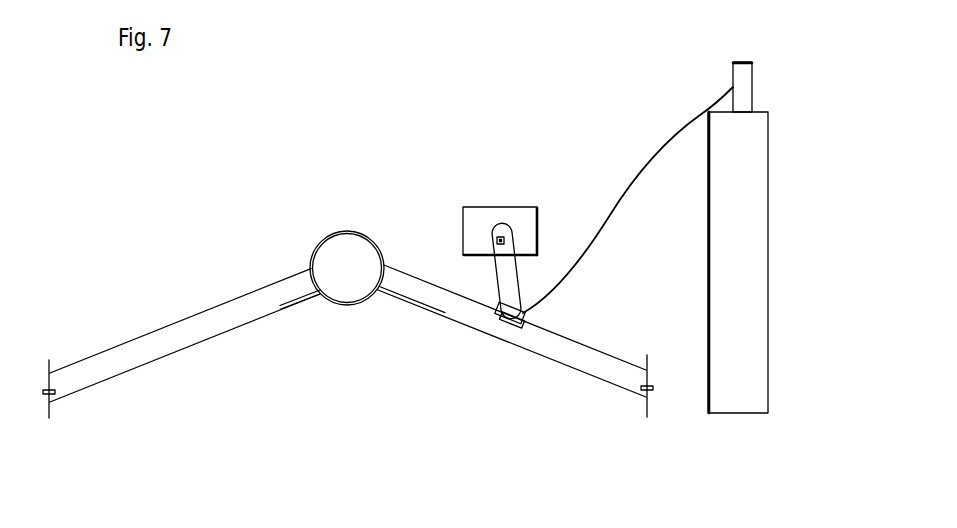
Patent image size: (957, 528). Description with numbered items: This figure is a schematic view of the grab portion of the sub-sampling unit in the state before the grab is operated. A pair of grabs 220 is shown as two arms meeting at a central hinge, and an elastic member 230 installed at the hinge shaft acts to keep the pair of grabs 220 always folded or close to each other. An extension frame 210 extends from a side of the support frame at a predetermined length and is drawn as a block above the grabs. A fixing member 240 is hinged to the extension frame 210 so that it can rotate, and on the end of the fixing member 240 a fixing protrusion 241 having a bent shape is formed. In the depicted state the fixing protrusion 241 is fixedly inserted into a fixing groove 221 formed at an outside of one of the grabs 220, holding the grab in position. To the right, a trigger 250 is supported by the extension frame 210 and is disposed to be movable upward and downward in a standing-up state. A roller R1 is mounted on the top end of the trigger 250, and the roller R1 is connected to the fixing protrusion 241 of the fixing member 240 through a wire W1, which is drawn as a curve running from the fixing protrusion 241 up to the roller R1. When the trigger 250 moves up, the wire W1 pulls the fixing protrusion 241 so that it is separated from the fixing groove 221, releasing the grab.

The extension frame 210 is at (510, 215).
The grabs 220 is at (601, 368).
The fixing groove 221 is at (510, 328).
The elastic member 230 is at (293, 304).
The fixing member 240 is at (495, 262).
The fixing protrusion 241 is at (497, 311).
The trigger 250 is at (732, 280).
The wire W1 is at (693, 116).
The roller R1 is at (746, 87).